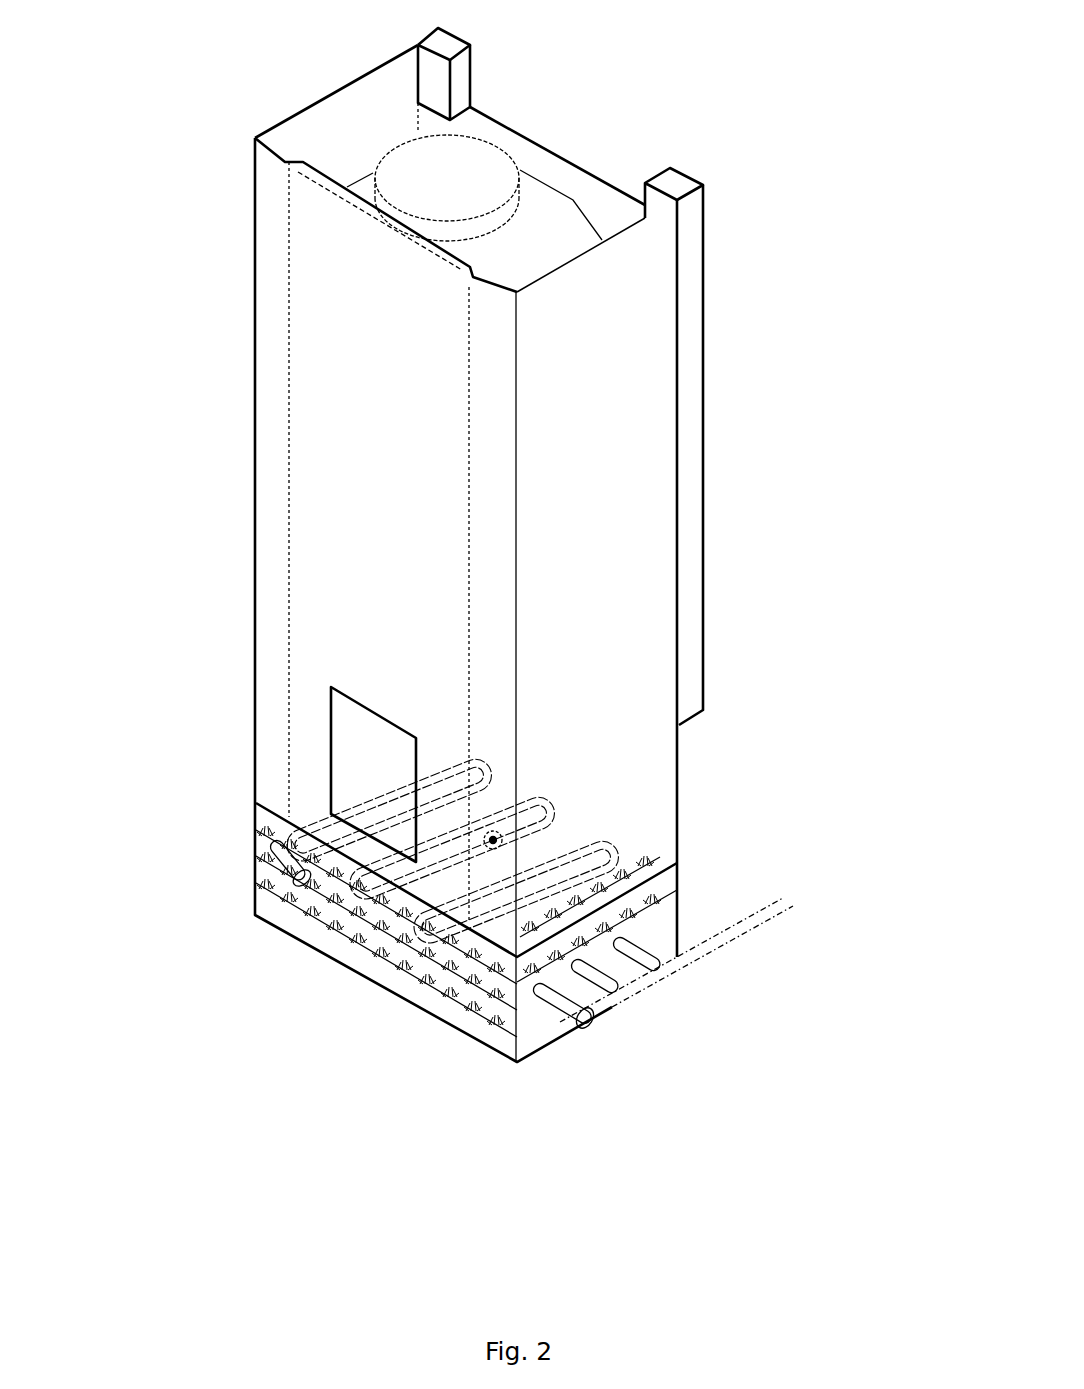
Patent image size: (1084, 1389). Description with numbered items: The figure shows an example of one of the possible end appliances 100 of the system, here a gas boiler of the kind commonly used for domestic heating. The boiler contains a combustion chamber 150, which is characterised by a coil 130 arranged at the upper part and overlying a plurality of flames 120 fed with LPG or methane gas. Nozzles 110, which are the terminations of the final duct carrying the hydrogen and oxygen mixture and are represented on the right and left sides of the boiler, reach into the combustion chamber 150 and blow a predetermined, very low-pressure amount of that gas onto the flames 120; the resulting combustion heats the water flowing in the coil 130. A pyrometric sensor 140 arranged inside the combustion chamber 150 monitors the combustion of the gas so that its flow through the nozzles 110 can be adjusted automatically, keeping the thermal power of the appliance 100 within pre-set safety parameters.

The appliance 100 is at (685, 150).
The nozzles 110 is at (273, 846).
The flames 120 is at (427, 983).
The coil 130 is at (352, 873).
The pyrometric sensor 140 is at (493, 840).
The combustion chamber 150 is at (770, 860).